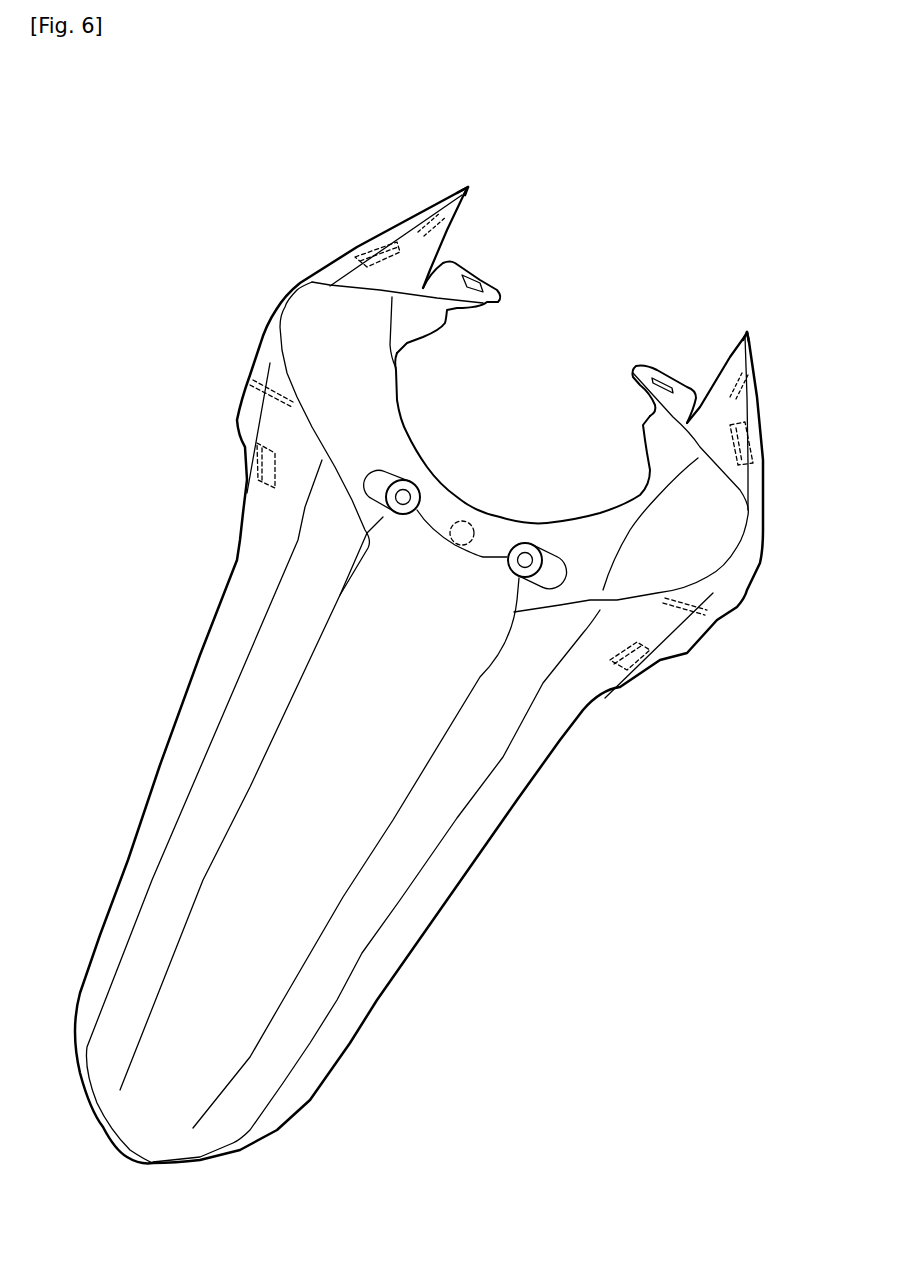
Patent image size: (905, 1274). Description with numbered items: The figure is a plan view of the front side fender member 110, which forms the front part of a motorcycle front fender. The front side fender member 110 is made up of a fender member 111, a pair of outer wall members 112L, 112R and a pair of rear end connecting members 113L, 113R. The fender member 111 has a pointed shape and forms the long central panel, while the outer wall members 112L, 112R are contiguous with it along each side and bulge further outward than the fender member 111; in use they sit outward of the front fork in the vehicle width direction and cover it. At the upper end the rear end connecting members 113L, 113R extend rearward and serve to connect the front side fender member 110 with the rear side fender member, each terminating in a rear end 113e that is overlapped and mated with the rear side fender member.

The front side fender member 110 is at (640, 247).
The fender member 111 is at (290, 938).
The outer wall member 112R is at (255, 347).
The outer wall member 112L is at (742, 590).
The rear end connecting member 113R is at (443, 243).
The rear end connecting member 113L is at (720, 374).
The rear end 113e is at (467, 183).